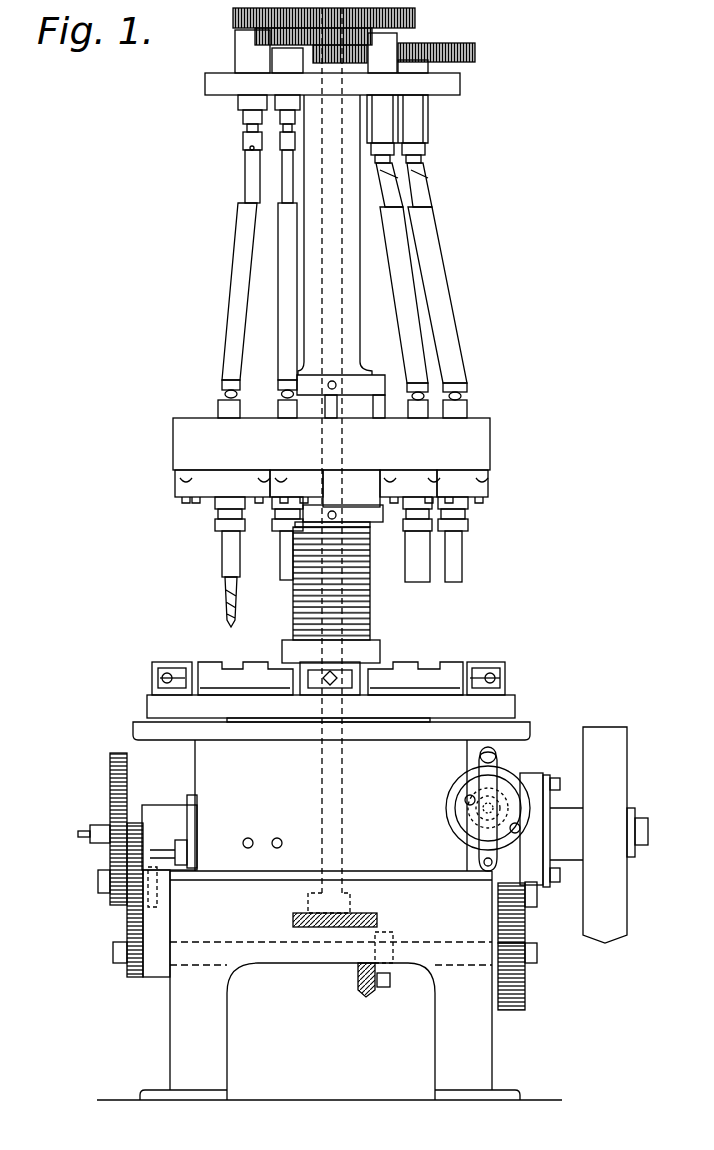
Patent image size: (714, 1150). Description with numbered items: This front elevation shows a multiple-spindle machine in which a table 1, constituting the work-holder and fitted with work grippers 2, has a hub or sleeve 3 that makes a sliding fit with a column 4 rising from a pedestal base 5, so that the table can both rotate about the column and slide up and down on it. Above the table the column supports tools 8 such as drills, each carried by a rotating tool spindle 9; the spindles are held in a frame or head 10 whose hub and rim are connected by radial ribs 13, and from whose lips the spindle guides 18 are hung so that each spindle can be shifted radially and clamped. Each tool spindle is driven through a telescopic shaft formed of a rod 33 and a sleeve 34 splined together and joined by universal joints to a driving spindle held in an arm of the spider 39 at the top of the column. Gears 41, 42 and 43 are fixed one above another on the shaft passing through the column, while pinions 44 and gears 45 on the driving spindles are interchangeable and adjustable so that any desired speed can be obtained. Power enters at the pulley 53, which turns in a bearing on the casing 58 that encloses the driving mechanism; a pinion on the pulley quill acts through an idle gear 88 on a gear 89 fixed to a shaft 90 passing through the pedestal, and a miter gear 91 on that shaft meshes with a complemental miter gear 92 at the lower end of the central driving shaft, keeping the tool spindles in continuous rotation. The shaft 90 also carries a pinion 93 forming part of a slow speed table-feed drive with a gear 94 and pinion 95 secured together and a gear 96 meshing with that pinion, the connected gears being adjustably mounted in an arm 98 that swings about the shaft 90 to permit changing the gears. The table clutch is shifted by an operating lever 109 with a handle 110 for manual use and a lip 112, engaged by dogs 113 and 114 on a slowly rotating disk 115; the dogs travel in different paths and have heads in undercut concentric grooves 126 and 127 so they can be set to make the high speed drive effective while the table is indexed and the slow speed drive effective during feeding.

The table 1 is at (505, 703).
The work grippers 2 is at (208, 666).
The hub or sleeve 3 is at (372, 652).
The column 4 is at (370, 605).
The pedestal base 5 is at (452, 950).
The tools 8 is at (226, 600).
The tool spindle 9 is at (280, 562).
The frame or head 10 is at (480, 447).
The radial ribs 13 is at (258, 400).
The spindle guides 18 is at (470, 487).
The rod 33 is at (285, 197).
The sleeve 34 is at (282, 307).
The head or spider 39 is at (237, 97).
The pinion or gear 41 is at (255, 86).
The pinion or gear 42 is at (300, 57).
The gear 43 is at (317, 46).
The pinions 44 is at (235, 22).
The gears 45 is at (477, 52).
The pulley 53 is at (630, 903).
The casing 58 is at (331, 805).
The idle gear 88 is at (537, 902).
The gear 89 is at (512, 1000).
The shaft 90 is at (405, 926).
The miter gear 91 is at (385, 918).
The complemental miter gear 92 is at (300, 916).
The pinion 93 is at (131, 977).
The gear 94 is at (127, 923).
The pinion 95 is at (110, 895).
The gear 96 is at (110, 772).
The arm 98 is at (157, 898).
The operating lever 109 is at (496, 773).
The handle 110 is at (480, 756).
The lip 112 is at (450, 826).
The dog 113 is at (465, 798).
The dog 114 is at (520, 828).
The disk 115 is at (508, 770).
The undercut concentric groove 126 is at (530, 806).
The undercut concentric groove 127 is at (515, 842).